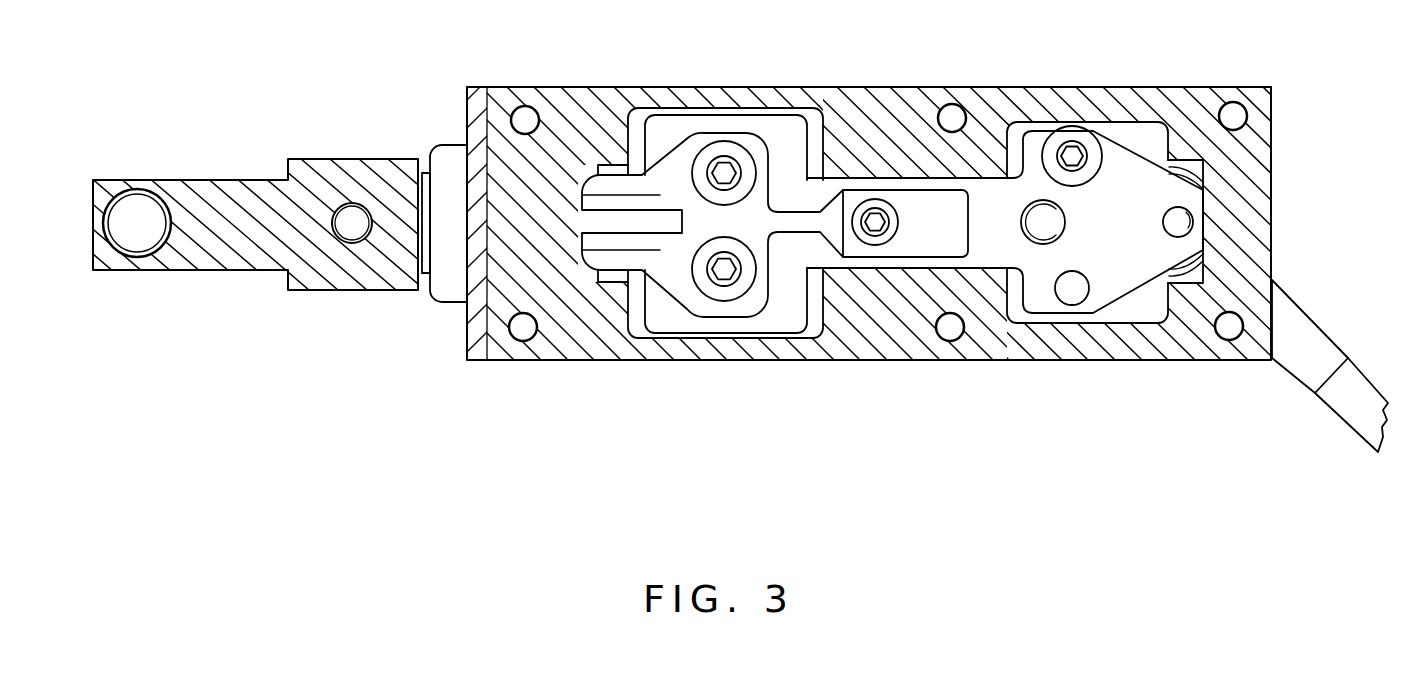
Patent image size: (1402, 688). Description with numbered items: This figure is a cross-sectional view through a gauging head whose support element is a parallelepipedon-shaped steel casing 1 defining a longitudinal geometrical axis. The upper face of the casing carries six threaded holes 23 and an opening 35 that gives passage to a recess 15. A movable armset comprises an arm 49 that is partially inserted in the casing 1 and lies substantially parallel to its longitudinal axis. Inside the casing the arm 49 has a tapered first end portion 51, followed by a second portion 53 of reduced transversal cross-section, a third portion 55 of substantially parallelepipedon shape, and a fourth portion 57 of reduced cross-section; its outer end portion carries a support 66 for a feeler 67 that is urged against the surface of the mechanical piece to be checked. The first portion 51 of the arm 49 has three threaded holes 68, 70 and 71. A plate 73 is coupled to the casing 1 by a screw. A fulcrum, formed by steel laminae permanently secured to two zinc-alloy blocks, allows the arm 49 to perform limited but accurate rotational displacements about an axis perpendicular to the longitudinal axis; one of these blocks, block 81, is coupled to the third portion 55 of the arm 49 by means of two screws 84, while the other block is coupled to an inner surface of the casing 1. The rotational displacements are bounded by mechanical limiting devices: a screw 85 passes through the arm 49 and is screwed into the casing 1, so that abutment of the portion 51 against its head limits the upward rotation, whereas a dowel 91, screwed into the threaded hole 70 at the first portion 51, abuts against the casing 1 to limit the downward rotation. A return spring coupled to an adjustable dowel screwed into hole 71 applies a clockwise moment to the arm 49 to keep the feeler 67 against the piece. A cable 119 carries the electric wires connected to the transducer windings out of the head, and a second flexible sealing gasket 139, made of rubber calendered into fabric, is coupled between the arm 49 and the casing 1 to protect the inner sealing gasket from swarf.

The casing 1 is at (509, 350).
The recess 15 is at (636, 145).
The threaded holes 23 is at (1233, 116).
The opening 35 is at (636, 318).
The arm 49 is at (784, 314).
The first end portion 51 is at (1137, 263).
The second portion 53 is at (923, 235).
The third portion 55 is at (753, 205).
The fourth portion 57 is at (526, 106).
The support 66 is at (310, 175).
The feeler 67 is at (137, 220).
The threaded hole 68 is at (1273, 262).
The threaded hole 70 is at (1080, 296).
The threaded hole 71 is at (1072, 290).
The plate 73 is at (985, 269).
The block 81 is at (676, 126).
The screws 84 is at (724, 173).
The screw 85 is at (1072, 156).
The dowel 91 is at (1040, 244).
The cable 119 is at (1347, 395).
The second flexible sealing gasket 139 is at (450, 275).